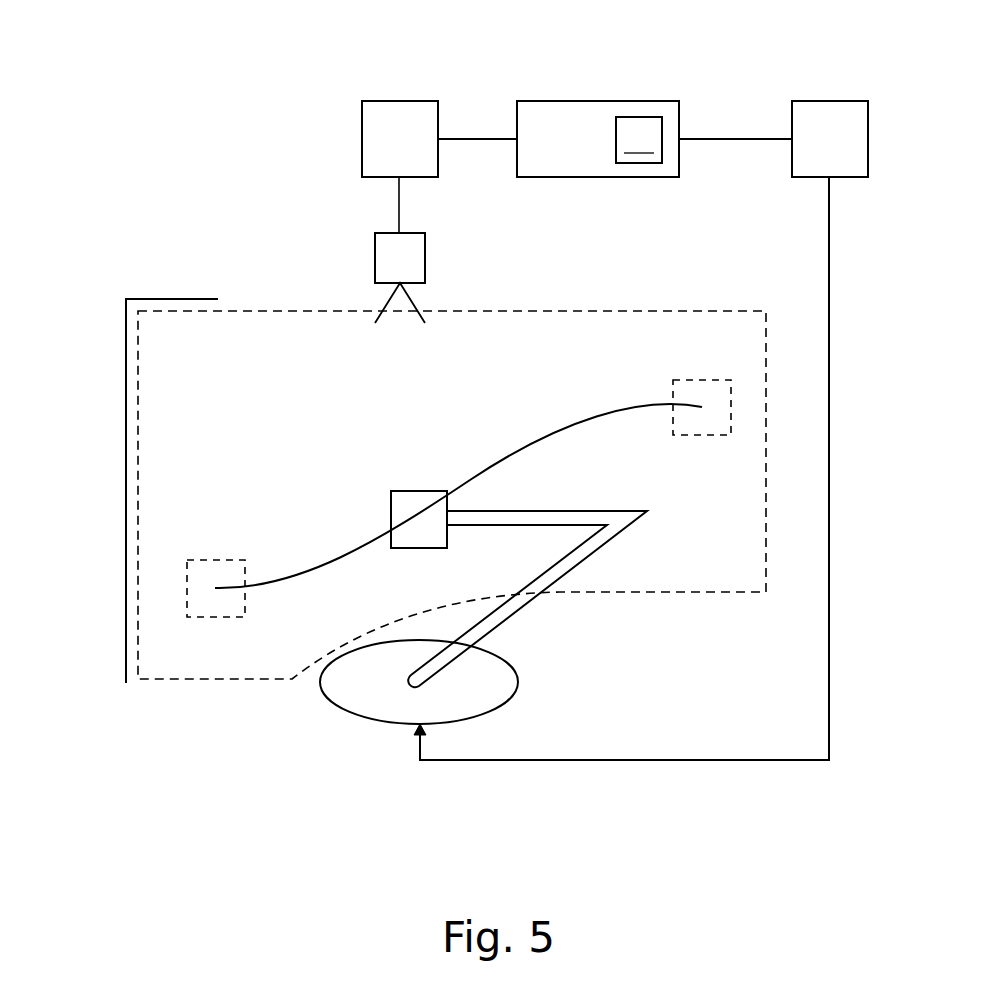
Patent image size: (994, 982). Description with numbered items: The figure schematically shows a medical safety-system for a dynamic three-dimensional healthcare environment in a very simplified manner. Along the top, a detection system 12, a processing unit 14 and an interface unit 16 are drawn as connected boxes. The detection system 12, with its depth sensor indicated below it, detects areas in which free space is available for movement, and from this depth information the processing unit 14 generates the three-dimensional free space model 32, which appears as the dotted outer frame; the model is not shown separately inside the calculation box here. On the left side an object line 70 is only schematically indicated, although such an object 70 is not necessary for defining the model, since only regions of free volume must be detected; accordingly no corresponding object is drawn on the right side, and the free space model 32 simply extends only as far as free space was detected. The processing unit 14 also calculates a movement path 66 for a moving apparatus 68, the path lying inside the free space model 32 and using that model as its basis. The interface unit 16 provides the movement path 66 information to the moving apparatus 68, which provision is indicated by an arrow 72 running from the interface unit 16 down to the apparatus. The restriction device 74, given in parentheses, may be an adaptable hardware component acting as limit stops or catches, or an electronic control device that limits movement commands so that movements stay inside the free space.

The detection system 12 is at (393, 101).
The processing unit 14 is at (590, 101).
The interface unit 16 is at (829, 101).
The 3D free space model 32 is at (655, 311).
The movement path 66 is at (540, 437).
The moving apparatus 68 is at (510, 608).
The object line 70 is at (126, 483).
The arrow 72 is at (829, 455).
The restriction device 74 is at (373, 702).